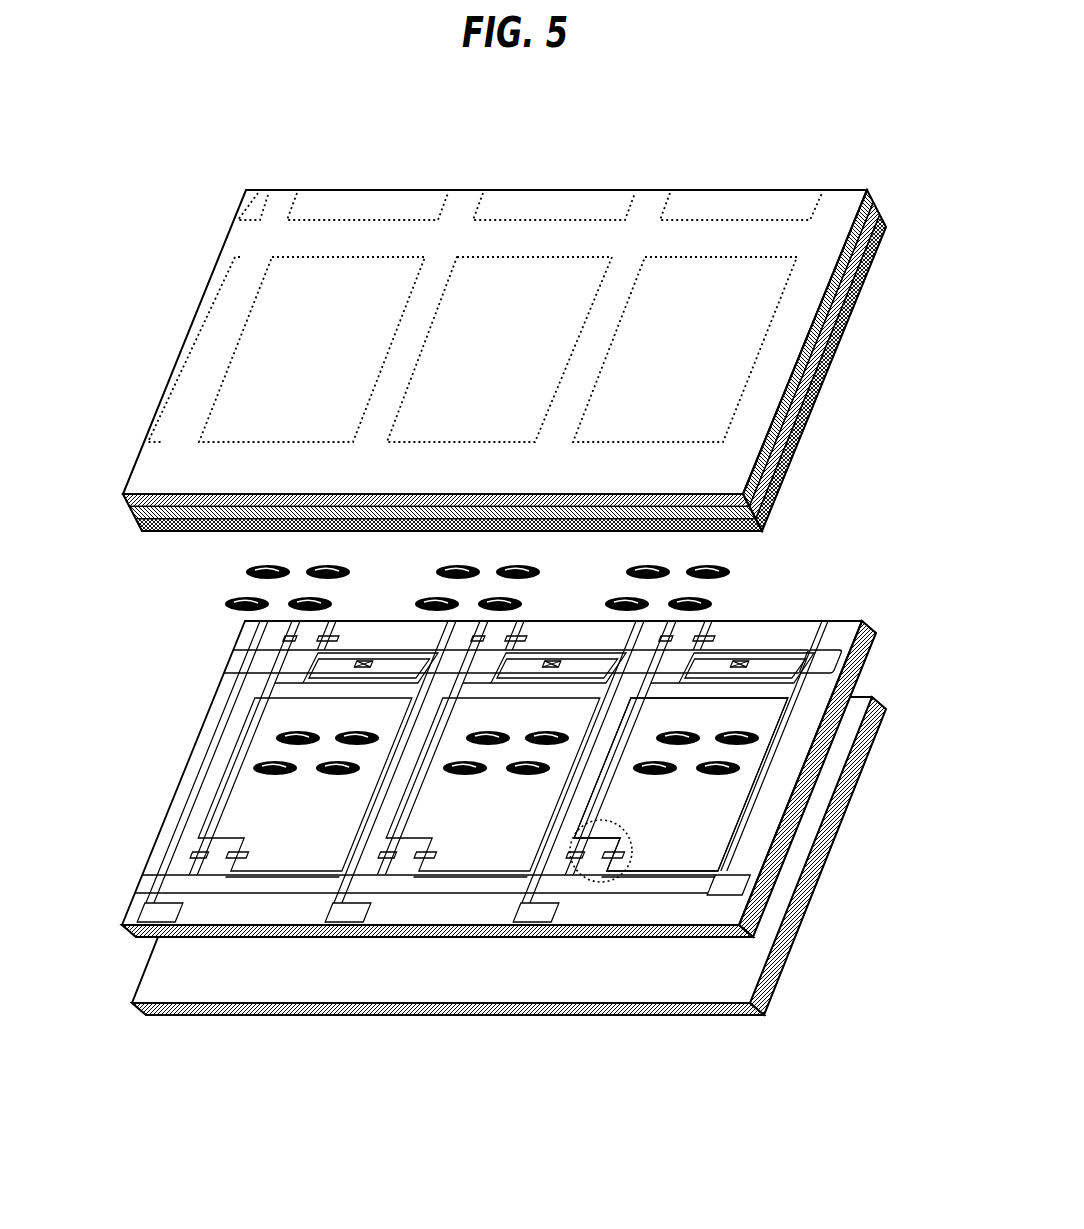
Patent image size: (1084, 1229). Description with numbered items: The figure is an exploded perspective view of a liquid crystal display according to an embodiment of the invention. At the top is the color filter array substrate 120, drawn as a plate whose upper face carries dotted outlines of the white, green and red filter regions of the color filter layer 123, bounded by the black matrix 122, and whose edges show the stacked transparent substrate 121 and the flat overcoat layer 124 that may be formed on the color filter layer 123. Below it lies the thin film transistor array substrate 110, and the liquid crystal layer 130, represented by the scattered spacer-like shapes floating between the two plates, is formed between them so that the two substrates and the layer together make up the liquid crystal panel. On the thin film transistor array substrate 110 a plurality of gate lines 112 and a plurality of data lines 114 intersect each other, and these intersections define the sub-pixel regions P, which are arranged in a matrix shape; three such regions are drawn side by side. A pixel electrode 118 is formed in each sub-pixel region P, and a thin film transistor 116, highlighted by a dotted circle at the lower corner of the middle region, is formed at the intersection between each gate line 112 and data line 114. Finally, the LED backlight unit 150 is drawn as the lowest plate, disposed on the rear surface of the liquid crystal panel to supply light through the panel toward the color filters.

The thin film transistor array substrate 110 is at (150, 804).
The gate lines 112 is at (453, 880).
The data lines 114 is at (537, 905).
The thin film transistor 116 is at (600, 884).
The pixel electrode 118 is at (735, 822).
The color filter array substrate 120 is at (643, 166).
The transparent substrate 121 is at (868, 193).
The black matrix 122 is at (268, 200).
The color filter layer 123 is at (387, 200).
The overcoat layer 124 is at (797, 442).
The liquid crystal layer 130 is at (742, 578).
The LED backlight unit 150 is at (157, 957).
The sub-pixel regions P is at (767, 748).